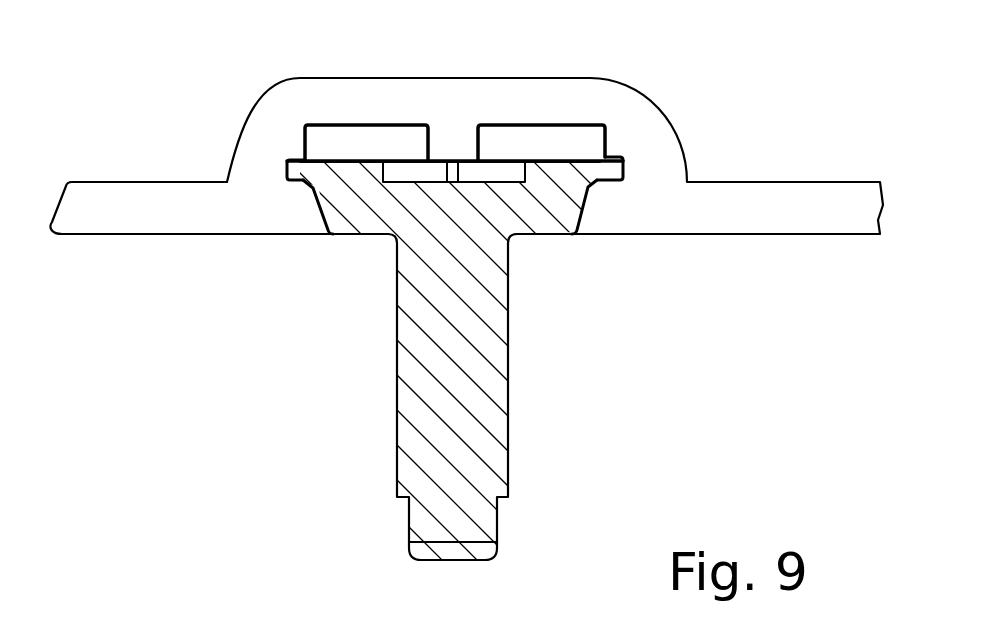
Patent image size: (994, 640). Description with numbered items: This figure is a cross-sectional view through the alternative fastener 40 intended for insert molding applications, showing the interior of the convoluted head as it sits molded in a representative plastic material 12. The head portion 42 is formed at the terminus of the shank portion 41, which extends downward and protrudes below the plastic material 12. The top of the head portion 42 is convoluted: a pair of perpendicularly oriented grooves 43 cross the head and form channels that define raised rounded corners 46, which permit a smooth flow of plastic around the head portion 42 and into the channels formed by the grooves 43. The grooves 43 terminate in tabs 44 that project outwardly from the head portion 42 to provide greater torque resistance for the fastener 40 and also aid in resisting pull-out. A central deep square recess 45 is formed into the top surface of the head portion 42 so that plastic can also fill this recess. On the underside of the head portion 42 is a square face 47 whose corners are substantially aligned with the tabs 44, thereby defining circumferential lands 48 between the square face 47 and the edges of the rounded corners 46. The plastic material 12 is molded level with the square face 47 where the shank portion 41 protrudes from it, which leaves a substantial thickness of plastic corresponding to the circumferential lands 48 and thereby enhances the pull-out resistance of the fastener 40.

The plastic material 12 is at (677, 138).
The fastener 40 is at (303, 406).
The shank portion 41 is at (495, 415).
The head portion 42 is at (363, 265).
The grooves 43 is at (455, 112).
The tabs 44 is at (288, 166).
The central deep square recess 45 is at (495, 176).
The raised rounded corners 46 is at (308, 126).
The square face 47 is at (543, 226).
The circumferential lands 48 is at (305, 195).